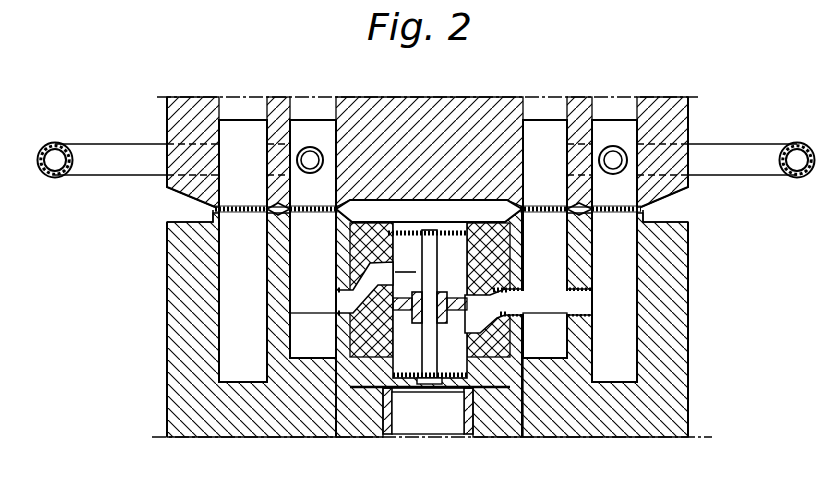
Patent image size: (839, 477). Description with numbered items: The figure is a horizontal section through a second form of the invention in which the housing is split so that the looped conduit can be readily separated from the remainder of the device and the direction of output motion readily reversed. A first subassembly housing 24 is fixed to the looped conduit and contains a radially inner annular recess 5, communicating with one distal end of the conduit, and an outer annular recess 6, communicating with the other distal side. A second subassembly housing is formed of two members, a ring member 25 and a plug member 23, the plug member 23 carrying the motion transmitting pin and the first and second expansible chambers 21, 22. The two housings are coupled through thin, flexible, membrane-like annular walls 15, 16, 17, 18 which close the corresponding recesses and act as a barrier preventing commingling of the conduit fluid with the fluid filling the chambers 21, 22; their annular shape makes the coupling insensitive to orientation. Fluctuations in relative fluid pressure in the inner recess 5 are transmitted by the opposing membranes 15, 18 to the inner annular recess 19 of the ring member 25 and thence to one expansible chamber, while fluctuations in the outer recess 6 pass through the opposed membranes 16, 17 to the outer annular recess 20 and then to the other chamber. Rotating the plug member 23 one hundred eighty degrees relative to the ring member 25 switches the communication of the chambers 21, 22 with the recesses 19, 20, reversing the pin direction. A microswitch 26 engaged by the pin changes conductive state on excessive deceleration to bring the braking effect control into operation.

The inner annular recess 5 is at (305, 127).
The outer annular recess 6 is at (230, 130).
The annular membrane 15 is at (288, 237).
The annular membrane 16 is at (215, 209).
The annular membrane 17 is at (268, 210).
The annular membrane 18 is at (305, 237).
The inner annular recess 19 is at (300, 333).
The outer annular recess 20 is at (237, 282).
The first expansible chamber 21 is at (375, 360).
The second expansible chamber 22 is at (430, 300).
The plug member 23 is at (350, 380).
The first subassembly housing 24 is at (193, 107).
The ring member 25 is at (183, 330).
The microswitch 26 is at (430, 418).